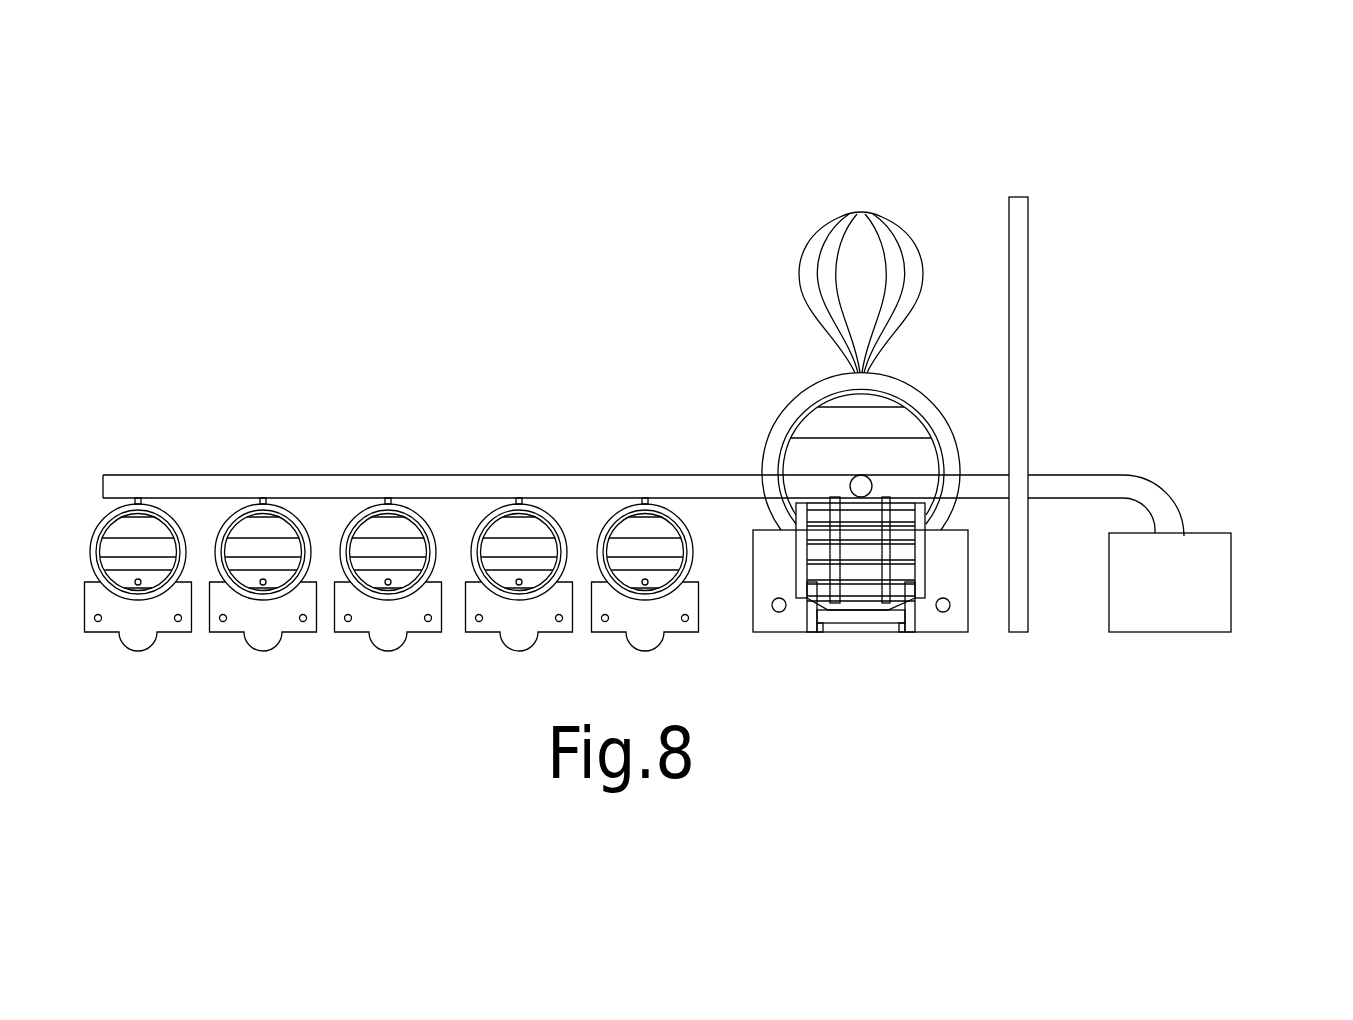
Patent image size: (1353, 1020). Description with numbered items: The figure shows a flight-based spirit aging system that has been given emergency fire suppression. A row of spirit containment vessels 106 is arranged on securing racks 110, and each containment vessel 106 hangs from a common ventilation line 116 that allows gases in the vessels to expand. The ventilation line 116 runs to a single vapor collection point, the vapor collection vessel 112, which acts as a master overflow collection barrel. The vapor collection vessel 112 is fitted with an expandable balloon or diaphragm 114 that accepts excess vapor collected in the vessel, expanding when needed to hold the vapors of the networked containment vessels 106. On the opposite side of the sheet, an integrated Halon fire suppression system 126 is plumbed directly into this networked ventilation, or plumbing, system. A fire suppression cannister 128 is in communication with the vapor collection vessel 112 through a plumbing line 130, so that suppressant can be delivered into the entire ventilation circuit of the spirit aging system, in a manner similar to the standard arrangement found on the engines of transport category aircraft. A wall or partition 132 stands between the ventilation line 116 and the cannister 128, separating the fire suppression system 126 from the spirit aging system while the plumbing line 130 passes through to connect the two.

The containment vessel 106 is at (133, 543).
The securing rack 110 is at (163, 620).
The vapor collection vessel 112 is at (803, 458).
The expandable balloon or diaphragm 114 is at (871, 257).
The ventilation line 116 is at (282, 483).
The fire suppression system 126 is at (1180, 530).
The fire suppression cannister 128 is at (1165, 590).
The plumbing line 130 is at (1067, 472).
The wall or partition 132 is at (1020, 207).